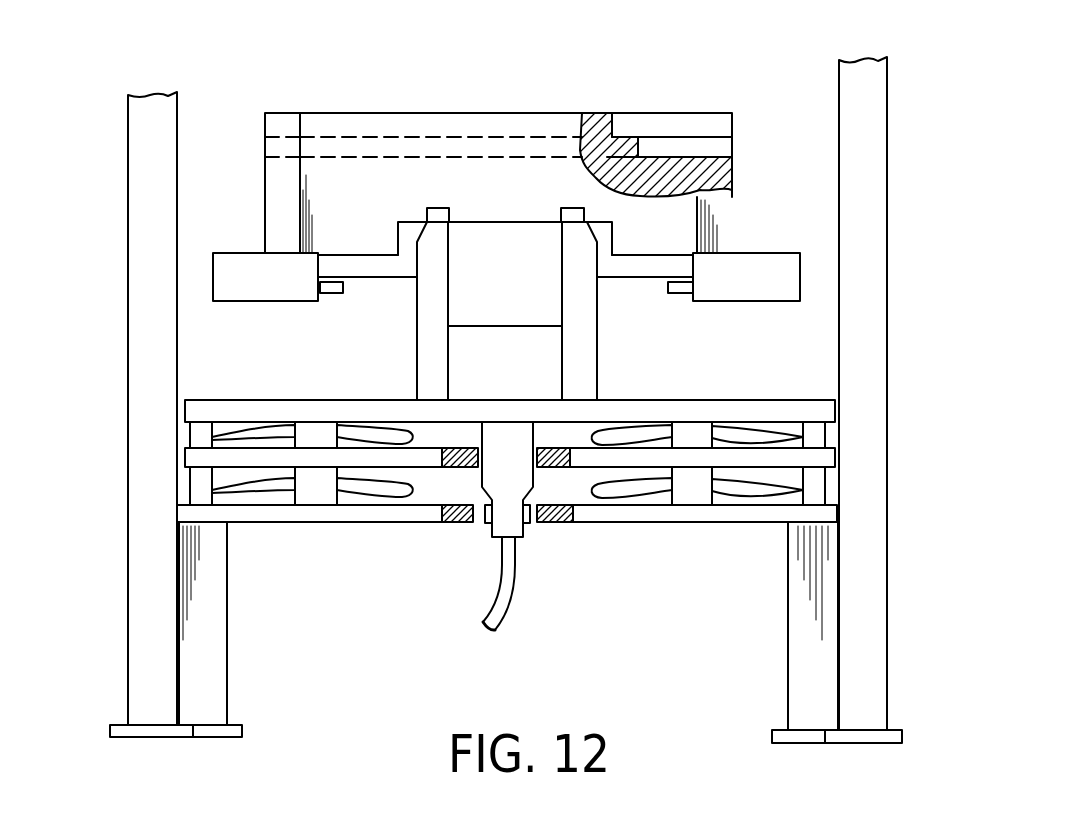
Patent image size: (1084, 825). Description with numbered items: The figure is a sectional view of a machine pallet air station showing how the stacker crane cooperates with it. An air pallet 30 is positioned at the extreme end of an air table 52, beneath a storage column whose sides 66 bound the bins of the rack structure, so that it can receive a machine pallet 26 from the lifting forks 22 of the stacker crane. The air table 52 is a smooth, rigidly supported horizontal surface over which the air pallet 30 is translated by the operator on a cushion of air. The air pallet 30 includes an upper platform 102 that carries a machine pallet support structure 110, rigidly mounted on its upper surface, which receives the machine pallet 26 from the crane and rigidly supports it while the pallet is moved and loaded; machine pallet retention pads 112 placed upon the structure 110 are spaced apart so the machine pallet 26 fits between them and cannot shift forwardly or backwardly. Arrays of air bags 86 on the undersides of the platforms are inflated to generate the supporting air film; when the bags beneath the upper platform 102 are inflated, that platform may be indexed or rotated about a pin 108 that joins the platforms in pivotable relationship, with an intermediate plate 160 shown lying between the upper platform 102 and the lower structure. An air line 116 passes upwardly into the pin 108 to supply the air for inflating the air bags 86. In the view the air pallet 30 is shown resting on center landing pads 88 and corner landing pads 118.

The lifting forks 22 is at (279, 290).
The machine pallet 26 is at (378, 112).
The air pallet 30 is at (749, 390).
The air table 52 is at (386, 513).
The sides of column 66 is at (130, 150).
The air bags 86 is at (408, 420).
The center landing pads 88 is at (320, 435).
The upper platform 102 is at (218, 410).
The pin 108 is at (460, 515).
The machine pallet support structure 110 is at (583, 312).
The machine pallet retention pads 112 is at (572, 208).
The air line 116 is at (485, 601).
The corner landing pads 118 is at (190, 435).
The middle plate 160 is at (255, 460).